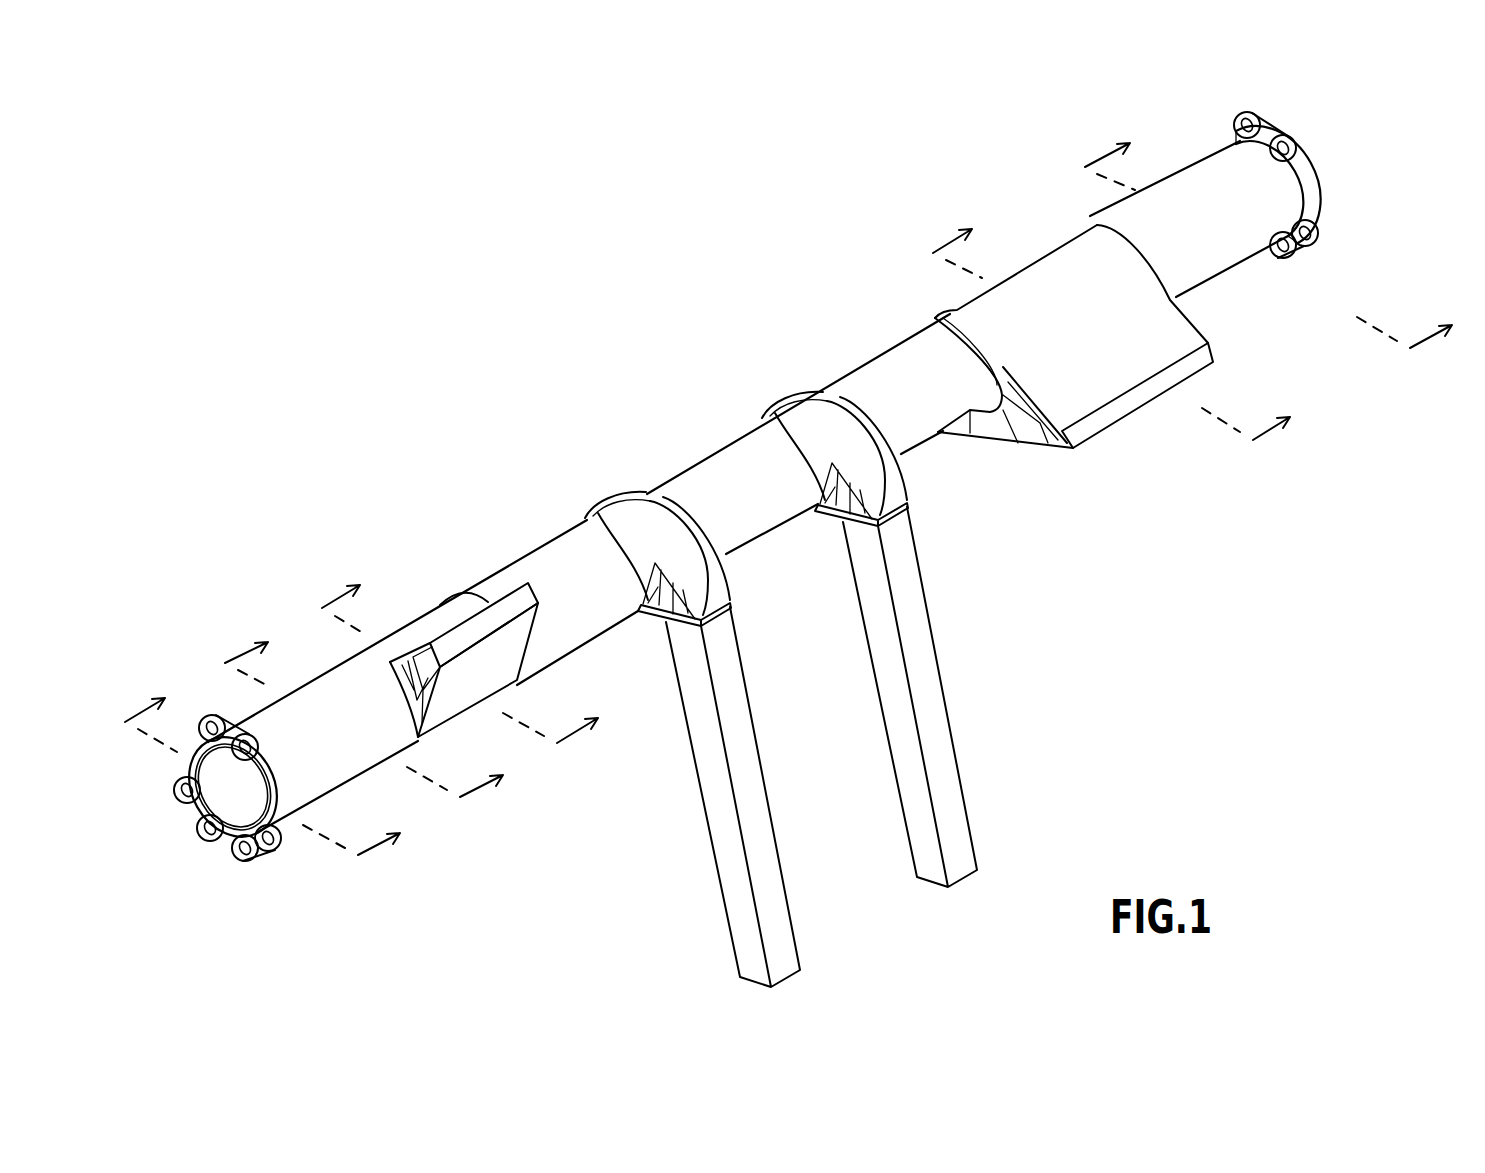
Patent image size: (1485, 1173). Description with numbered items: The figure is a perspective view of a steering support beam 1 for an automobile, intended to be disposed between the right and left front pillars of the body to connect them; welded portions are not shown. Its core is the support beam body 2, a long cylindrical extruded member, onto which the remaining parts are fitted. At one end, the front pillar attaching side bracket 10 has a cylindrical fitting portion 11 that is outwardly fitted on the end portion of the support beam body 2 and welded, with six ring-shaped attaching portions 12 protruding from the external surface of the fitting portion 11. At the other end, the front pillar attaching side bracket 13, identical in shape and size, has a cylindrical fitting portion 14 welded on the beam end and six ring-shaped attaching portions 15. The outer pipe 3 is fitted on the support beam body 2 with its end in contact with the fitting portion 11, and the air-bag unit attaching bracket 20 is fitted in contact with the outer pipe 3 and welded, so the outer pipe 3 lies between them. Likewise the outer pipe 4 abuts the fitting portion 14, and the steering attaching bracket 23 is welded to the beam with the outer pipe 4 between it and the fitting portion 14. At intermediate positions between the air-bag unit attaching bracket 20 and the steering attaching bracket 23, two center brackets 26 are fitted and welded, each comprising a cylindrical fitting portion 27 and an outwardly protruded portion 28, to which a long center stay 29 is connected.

The steering support beam 1 is at (488, 447).
The support beam body 2 is at (712, 472).
The outer pipe 3 is at (323, 703).
The outer pipe 4 is at (1200, 192).
The front pillar attaching side bracket 10 is at (217, 712).
The fitting portion 11 is at (198, 803).
The ring-shaped attaching portions 12 is at (175, 786).
The front pillar attaching side bracket 13 is at (1306, 170).
The fitting portion 14 is at (1308, 188).
The ring-shaped attaching portions 15 is at (1258, 113).
The air-bag unit attaching bracket 20 is at (440, 617).
The steering attaching bracket 23 is at (1040, 282).
The center bracket 26 is at (809, 509).
The fitting portion 27 is at (650, 518).
The protruded portion 28 is at (700, 595).
The center stay 29 is at (748, 792).